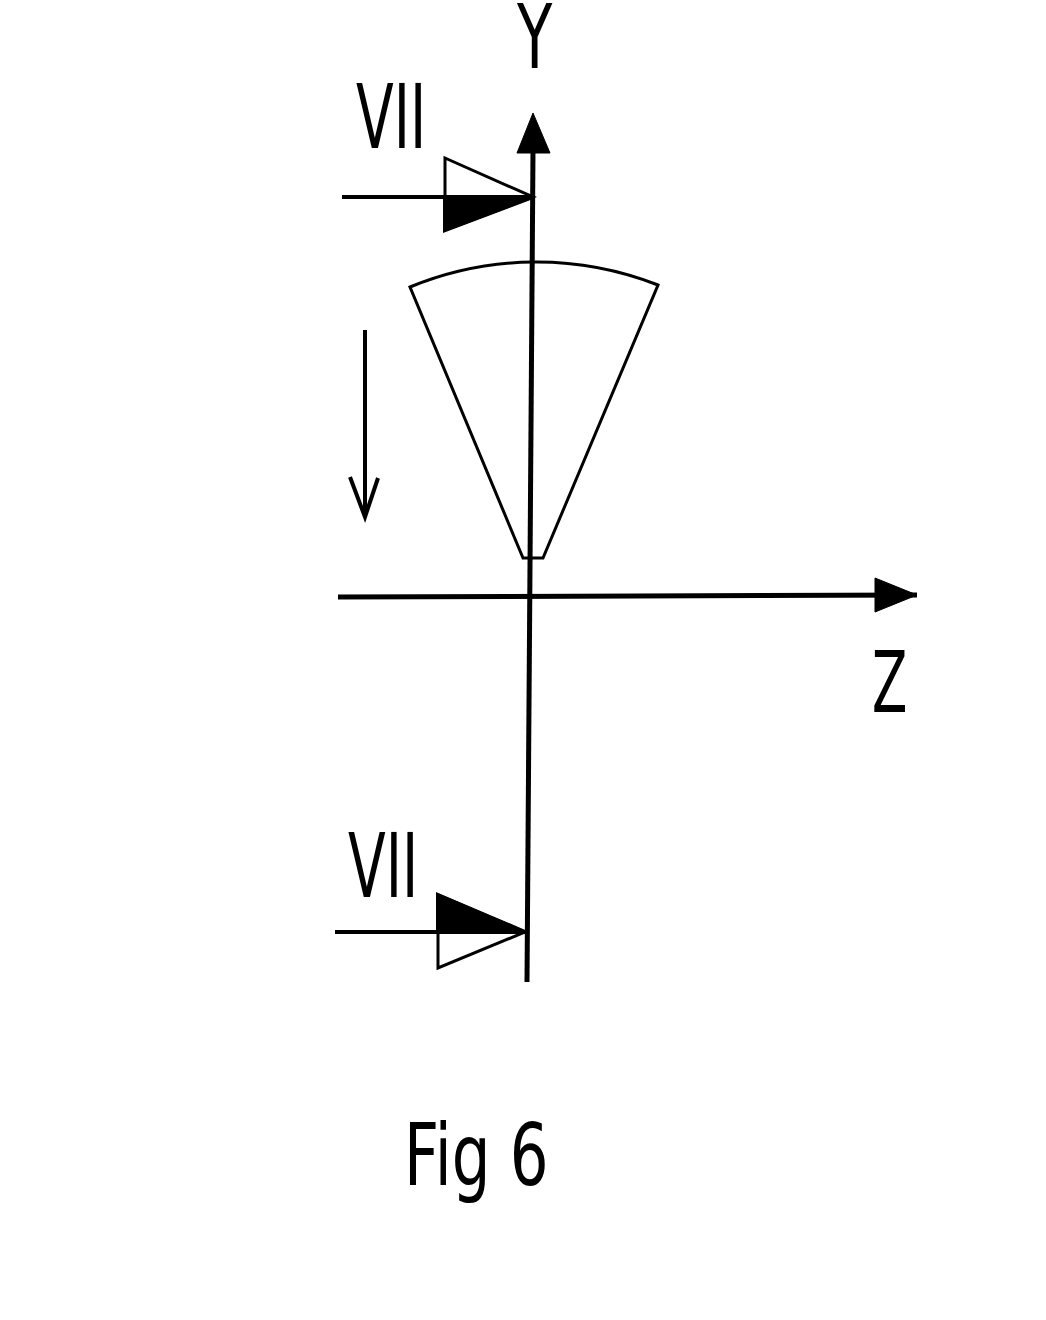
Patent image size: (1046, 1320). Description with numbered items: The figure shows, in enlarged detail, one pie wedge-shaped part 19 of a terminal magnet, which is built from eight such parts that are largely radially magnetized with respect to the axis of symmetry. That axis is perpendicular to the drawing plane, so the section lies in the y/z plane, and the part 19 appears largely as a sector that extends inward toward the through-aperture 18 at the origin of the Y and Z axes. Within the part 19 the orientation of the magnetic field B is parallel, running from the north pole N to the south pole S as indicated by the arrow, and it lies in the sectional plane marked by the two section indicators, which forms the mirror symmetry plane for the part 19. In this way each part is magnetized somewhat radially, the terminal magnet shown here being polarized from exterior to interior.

The through-aperture 18 is at (534, 583).
The pie wedge-shaped part 19 is at (607, 305).
The magnetic field B is at (358, 408).